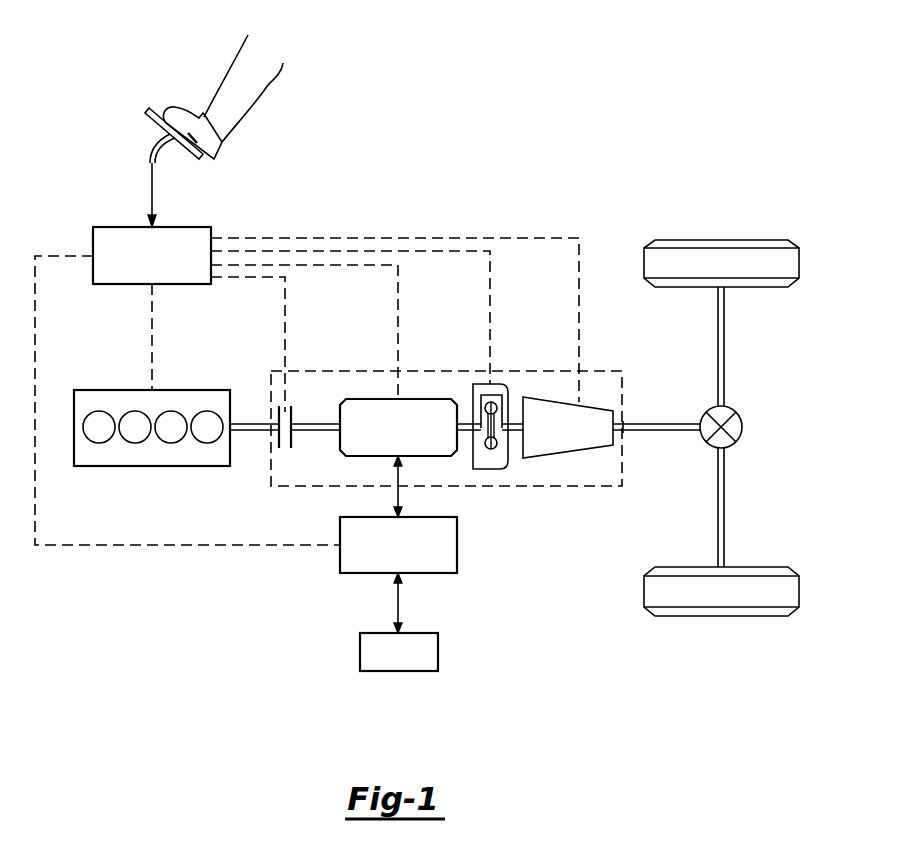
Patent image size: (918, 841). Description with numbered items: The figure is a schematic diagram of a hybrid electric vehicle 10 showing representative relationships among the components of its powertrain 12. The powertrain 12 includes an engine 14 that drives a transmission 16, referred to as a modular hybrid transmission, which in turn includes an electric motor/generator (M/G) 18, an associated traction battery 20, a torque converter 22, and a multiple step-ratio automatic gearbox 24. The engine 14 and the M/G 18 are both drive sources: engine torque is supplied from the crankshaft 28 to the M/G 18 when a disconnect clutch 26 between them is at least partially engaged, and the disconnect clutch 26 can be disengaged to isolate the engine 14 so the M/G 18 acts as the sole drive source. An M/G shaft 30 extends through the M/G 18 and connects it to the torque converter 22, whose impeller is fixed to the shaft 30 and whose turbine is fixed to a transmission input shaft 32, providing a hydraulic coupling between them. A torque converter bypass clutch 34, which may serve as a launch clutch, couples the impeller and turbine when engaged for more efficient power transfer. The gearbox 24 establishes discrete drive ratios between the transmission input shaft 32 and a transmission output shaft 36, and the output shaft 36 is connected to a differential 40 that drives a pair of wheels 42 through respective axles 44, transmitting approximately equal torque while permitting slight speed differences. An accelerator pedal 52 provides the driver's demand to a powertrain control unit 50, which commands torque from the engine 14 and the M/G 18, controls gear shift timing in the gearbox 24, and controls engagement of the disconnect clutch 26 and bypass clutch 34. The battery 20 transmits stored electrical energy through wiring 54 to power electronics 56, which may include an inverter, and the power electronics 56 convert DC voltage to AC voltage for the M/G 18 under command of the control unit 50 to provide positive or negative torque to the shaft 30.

The hybrid electric vehicle 10 is at (624, 182).
The powertrain 12 is at (230, 576).
The engine 14 is at (90, 390).
The transmission 16 is at (433, 366).
The motor/generator (M/G) 18 is at (380, 399).
The traction battery 20 is at (360, 653).
The torque converter 22 is at (486, 470).
The gearbox 24 is at (562, 453).
The disconnect clutch 26 is at (284, 448).
The crankshaft 28 is at (254, 424).
The M/G shaft 30 is at (320, 424).
The transmission input shaft 32 is at (511, 423).
The torque converter bypass clutch 34 is at (489, 392).
The transmission output shaft 36 is at (669, 424).
The differential 40 is at (742, 427).
The wheels 42 is at (723, 240).
The axles 44 is at (725, 348).
The powertrain control unit (PCU) 50 is at (107, 227).
The accelerator pedal 52 is at (148, 120).
The wiring 54 is at (395, 490).
The power electronics 56 is at (457, 545).